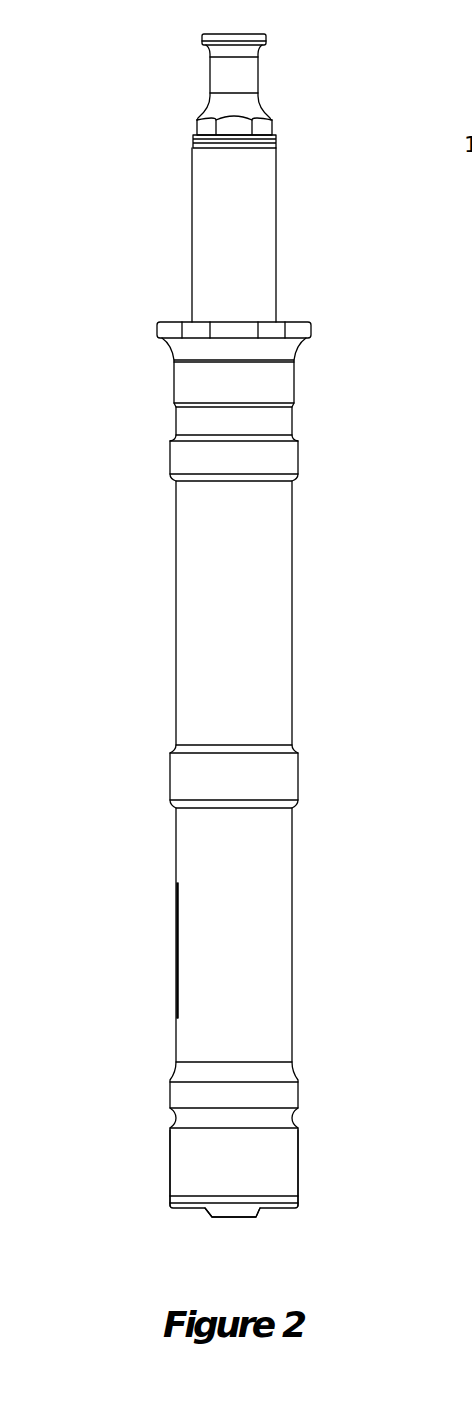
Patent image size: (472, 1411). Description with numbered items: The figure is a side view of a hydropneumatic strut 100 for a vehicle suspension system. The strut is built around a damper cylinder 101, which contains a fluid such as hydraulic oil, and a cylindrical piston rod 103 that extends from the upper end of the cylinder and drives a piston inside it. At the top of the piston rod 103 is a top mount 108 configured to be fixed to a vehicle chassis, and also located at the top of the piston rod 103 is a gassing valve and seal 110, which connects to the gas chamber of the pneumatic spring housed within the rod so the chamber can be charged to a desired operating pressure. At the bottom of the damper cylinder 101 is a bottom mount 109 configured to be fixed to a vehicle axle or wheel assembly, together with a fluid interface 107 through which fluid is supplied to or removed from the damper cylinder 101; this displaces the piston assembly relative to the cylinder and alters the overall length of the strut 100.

The hydropneumatic strut 100 is at (118, 208).
The damper cylinder 101 is at (198, 600).
The piston rod 103 is at (212, 250).
The fluid interface 107 is at (227, 1212).
The top mount 108 is at (292, 92).
The bottom mount 109 is at (276, 1165).
The gassing valve and seal 110 is at (207, 110).